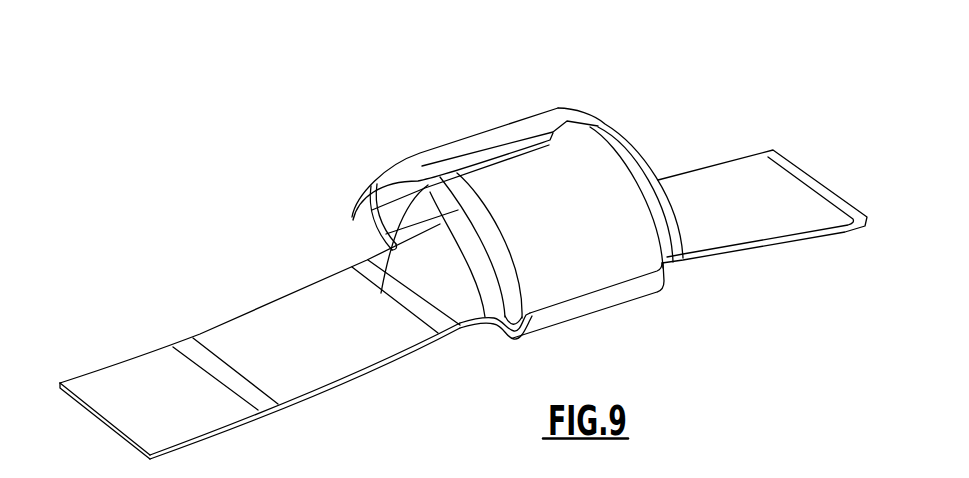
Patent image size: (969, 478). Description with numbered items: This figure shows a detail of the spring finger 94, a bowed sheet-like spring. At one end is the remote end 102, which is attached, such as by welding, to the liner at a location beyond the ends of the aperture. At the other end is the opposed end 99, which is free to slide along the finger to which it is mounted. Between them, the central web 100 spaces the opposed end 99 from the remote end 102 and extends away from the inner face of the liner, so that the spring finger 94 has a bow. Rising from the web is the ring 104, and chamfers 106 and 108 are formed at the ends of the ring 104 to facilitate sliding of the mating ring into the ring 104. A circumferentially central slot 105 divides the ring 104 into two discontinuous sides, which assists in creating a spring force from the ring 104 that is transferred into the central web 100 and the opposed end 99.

The spring finger 94 is at (262, 250).
The opposed end 99 is at (740, 190).
The central web 100 is at (472, 303).
The remote end 102 is at (148, 385).
The ring 104 is at (603, 176).
The circumferentially central slot 105 is at (382, 290).
The chamfer 106 is at (620, 130).
The chamfer 108 is at (399, 162).